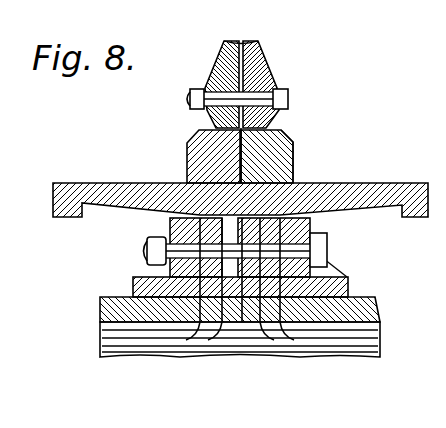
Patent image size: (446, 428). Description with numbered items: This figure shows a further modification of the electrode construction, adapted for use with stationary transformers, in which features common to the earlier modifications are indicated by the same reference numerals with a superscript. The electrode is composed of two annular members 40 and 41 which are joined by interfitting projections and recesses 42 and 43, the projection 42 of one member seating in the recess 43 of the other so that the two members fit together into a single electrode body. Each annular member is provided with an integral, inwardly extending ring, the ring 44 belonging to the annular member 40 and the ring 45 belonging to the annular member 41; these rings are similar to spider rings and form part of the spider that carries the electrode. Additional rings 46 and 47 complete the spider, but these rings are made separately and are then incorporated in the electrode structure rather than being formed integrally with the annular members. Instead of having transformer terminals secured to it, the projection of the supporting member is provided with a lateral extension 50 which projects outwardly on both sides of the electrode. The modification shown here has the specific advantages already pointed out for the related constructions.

The annular member 40 is at (207, 138).
The annular member 41 is at (262, 141).
The recess 43 is at (285, 172).
The lateral extension 50 is at (113, 192).
The inwardly extending ring 44 is at (176, 221).
The additional ring 46 is at (150, 252).
The projection 42 is at (375, 233).
The additional ring 47 is at (136, 289).
The inwardly extending ring 45 is at (400, 288).